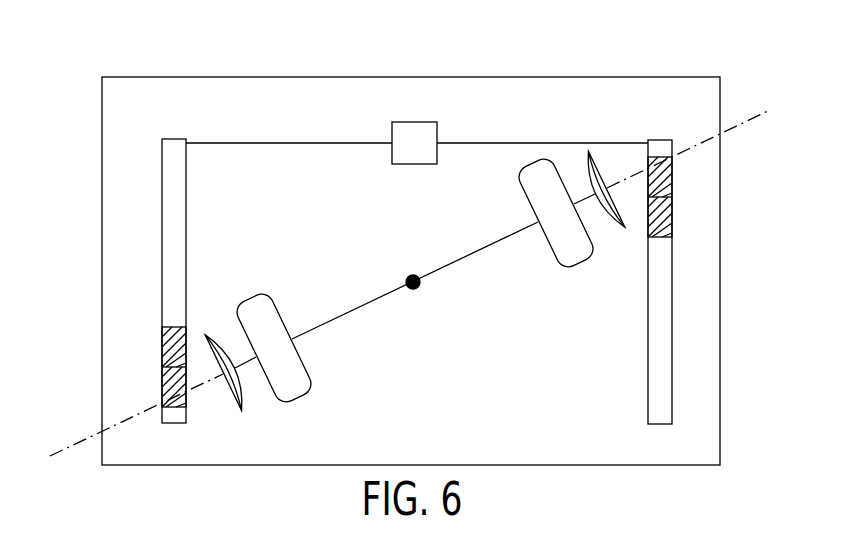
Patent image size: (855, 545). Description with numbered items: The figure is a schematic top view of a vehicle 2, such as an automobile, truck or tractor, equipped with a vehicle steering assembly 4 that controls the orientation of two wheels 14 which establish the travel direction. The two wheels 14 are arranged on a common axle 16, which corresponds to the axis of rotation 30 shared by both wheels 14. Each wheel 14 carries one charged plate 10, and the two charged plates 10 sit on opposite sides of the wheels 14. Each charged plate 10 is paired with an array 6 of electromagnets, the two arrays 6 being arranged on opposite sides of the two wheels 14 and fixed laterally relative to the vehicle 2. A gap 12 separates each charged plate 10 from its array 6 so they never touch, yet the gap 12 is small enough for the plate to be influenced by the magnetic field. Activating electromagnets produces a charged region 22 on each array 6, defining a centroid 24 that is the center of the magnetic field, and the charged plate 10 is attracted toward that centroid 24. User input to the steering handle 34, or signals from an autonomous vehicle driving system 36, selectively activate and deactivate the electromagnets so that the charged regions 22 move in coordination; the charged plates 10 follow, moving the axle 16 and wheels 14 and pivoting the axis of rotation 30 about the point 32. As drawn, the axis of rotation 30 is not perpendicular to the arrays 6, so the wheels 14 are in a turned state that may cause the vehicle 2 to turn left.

The vehicle 2 is at (102, 144).
The vehicle steering assembly 4 is at (680, 137).
The array of electromagnets 6 is at (162, 222).
The charged plate 10 is at (241, 408).
The gap 12 is at (210, 404).
The wheel 14 is at (253, 296).
The axle 16 is at (362, 306).
The charged region 22 is at (162, 340).
The centroid 24 is at (162, 356).
The axis of rotation 30 is at (82, 442).
The point 32 is at (422, 298).
The steering handle 34 is at (369, 129).
The autonomous vehicle driving system 36 is at (413, 122).